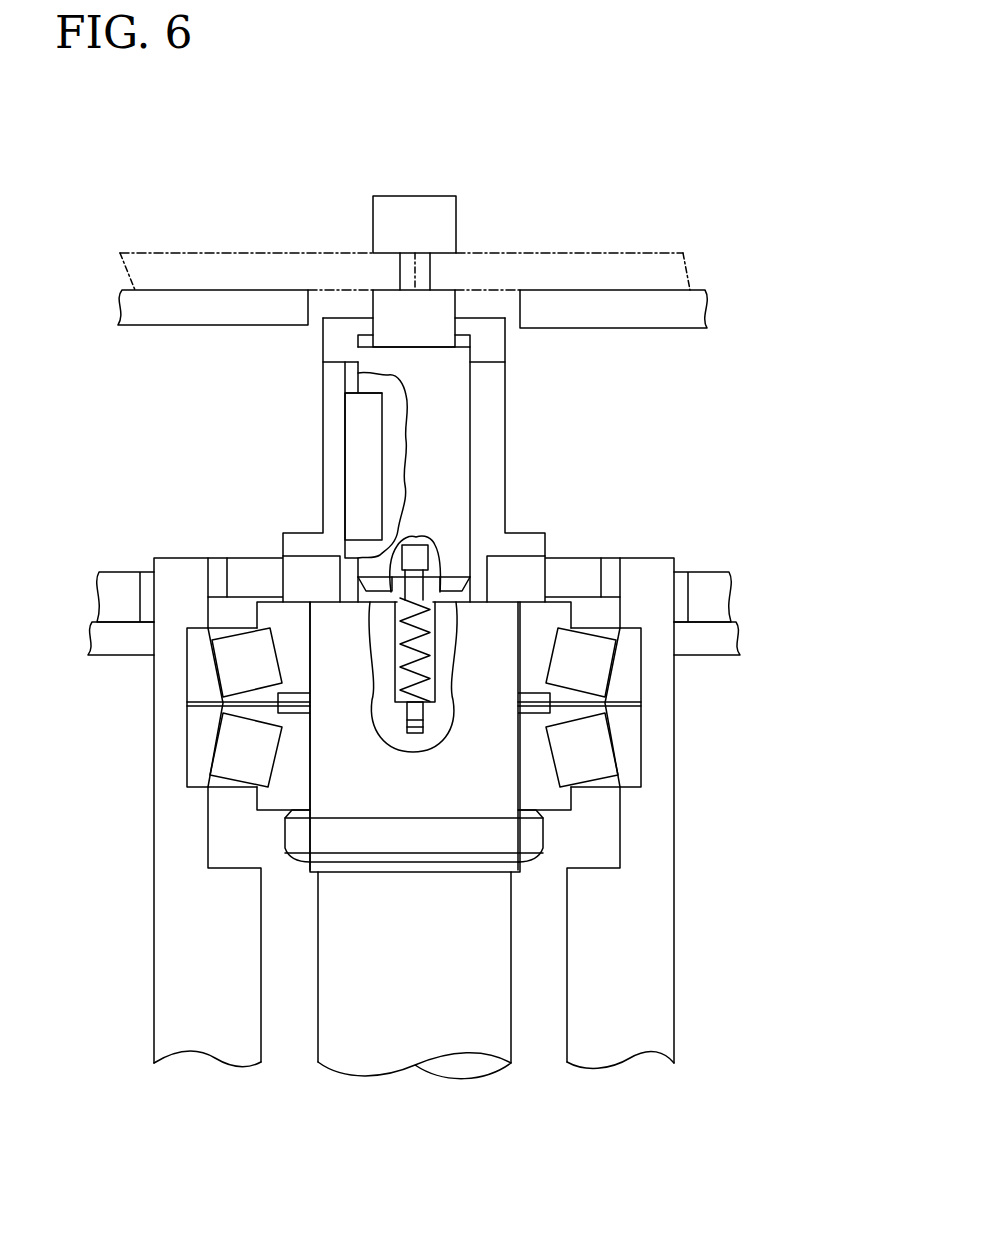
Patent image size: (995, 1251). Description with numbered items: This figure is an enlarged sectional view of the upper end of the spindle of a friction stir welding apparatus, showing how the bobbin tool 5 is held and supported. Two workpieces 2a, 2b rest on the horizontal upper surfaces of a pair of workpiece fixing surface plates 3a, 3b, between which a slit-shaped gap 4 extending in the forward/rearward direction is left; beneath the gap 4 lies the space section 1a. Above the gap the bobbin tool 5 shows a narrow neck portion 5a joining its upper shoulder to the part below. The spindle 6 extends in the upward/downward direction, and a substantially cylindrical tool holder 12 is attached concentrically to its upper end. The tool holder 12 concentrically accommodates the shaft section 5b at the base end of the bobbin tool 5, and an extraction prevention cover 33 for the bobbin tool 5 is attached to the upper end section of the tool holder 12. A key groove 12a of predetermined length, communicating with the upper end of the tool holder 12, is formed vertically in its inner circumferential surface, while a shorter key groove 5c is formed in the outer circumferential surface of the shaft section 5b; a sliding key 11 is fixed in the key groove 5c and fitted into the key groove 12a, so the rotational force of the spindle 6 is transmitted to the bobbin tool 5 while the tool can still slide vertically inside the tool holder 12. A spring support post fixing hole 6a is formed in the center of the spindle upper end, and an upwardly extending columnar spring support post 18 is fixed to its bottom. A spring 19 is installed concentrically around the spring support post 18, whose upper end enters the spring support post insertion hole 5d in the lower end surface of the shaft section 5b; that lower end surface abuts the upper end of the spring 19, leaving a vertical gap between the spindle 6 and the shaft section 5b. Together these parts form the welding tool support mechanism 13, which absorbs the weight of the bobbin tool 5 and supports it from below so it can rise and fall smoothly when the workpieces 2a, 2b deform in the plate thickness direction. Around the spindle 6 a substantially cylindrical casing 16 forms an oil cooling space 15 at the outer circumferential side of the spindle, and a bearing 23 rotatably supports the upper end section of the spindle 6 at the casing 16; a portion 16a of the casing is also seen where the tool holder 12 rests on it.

The space section 1a is at (560, 350).
The workpiece 2a is at (632, 262).
The workpiece 2b is at (157, 262).
The workpiece fixing surface plate 3a is at (653, 300).
The workpiece fixing surface plate 3b is at (113, 307).
The gap 4 is at (345, 302).
The bobbin tool 5 is at (392, 200).
The pin neck portion 5a is at (432, 273).
The shaft section 5b is at (476, 458).
The key groove 5c is at (385, 427).
The spring support post insertion hole 5d is at (430, 550).
The spindle 6 is at (505, 915).
The spring support post fixing hole 6a is at (393, 688).
The sliding key 11 is at (362, 426).
The tool holder 12 is at (498, 392).
The key groove 12a is at (338, 380).
The welding tool support mechanism 13 is at (387, 640).
The oil cooling space 15 is at (612, 829).
The casing 16 is at (670, 997).
The housing boss bolt 16a is at (217, 572).
The spring support post 18 is at (418, 668).
The spring 19 is at (437, 622).
The bearing 23 is at (632, 745).
The extraction prevention cover 33 is at (492, 328).